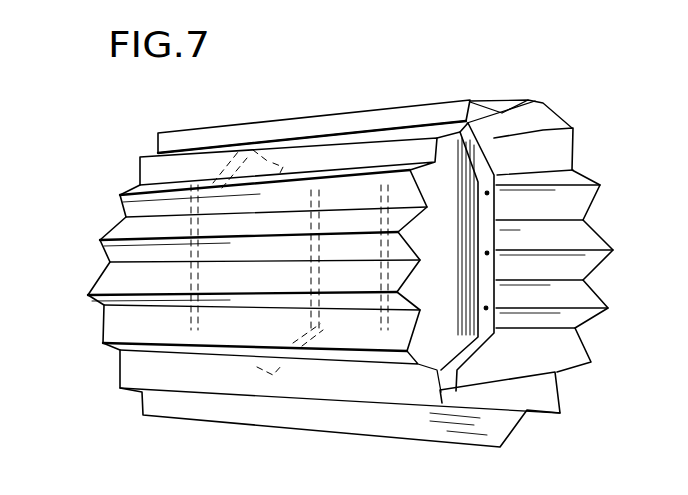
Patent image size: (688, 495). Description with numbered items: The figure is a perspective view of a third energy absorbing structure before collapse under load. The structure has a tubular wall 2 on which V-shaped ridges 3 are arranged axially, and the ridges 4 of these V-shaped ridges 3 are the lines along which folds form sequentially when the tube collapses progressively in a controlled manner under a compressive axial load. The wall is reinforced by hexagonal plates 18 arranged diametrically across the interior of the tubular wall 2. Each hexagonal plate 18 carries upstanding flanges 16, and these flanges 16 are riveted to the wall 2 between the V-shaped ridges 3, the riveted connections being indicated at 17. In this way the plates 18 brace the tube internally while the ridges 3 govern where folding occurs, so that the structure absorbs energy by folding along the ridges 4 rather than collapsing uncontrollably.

The wall 2 is at (123, 326).
The V-shaped ridges 3 is at (140, 158).
The ridges 4 is at (403, 105).
The upstanding flanges 16 is at (480, 156).
The rivets 17 is at (486, 254).
The hexagonal plates 18 is at (288, 150).